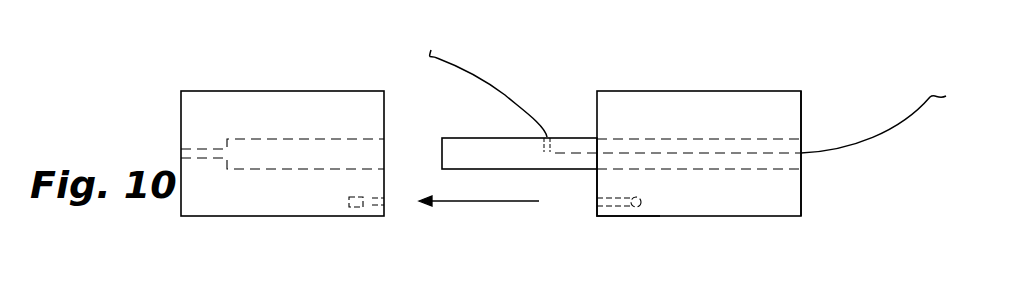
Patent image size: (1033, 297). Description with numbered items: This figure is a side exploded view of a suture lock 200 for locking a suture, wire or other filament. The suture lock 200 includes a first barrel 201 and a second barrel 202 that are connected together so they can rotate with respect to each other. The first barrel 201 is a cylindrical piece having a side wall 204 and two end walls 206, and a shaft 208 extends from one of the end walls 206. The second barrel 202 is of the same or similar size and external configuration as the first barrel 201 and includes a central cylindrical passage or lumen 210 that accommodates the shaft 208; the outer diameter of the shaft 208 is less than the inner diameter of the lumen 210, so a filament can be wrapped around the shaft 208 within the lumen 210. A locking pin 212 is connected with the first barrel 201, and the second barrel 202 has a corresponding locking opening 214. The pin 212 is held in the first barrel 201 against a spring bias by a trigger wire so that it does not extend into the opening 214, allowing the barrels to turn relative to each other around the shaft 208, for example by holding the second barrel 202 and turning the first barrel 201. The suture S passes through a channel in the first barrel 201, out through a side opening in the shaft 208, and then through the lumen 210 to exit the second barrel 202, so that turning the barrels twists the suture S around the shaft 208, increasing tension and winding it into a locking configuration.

The suture lock 200 is at (183, 76).
The second barrel 202 is at (257, 91).
The lumen 210 is at (272, 169).
The locking opening 214 is at (359, 208).
The shaft 208 is at (490, 143).
The first barrel 201 is at (716, 91).
The side wall 204 is at (645, 91).
The end wall 206 is at (597, 210).
The locking pin 212 is at (644, 203).
The suture S is at (889, 139).